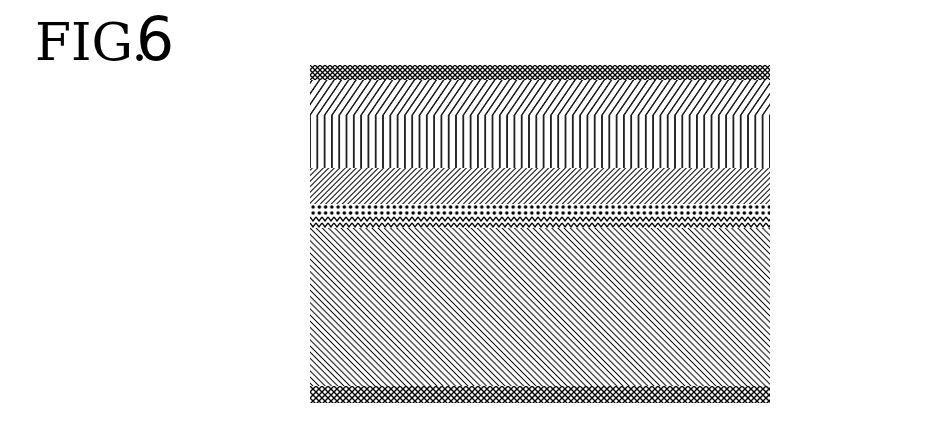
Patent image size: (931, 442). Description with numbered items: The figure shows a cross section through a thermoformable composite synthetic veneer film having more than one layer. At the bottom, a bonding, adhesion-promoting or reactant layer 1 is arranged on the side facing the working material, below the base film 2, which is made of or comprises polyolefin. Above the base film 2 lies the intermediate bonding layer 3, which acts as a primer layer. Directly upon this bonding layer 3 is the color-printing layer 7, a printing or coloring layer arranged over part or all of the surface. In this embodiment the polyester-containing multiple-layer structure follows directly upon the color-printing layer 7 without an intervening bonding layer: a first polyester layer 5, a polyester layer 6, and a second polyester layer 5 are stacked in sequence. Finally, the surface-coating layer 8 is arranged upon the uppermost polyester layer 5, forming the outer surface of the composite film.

The bonding layer 1 is at (762, 388).
The base film 2 is at (762, 328).
The bonding layer 3 is at (762, 217).
The polyester layer 5 is at (762, 83).
The polyester layer 6 is at (752, 133).
The color-printing layer 7 is at (762, 206).
The surface-coating layer 8 is at (762, 62).